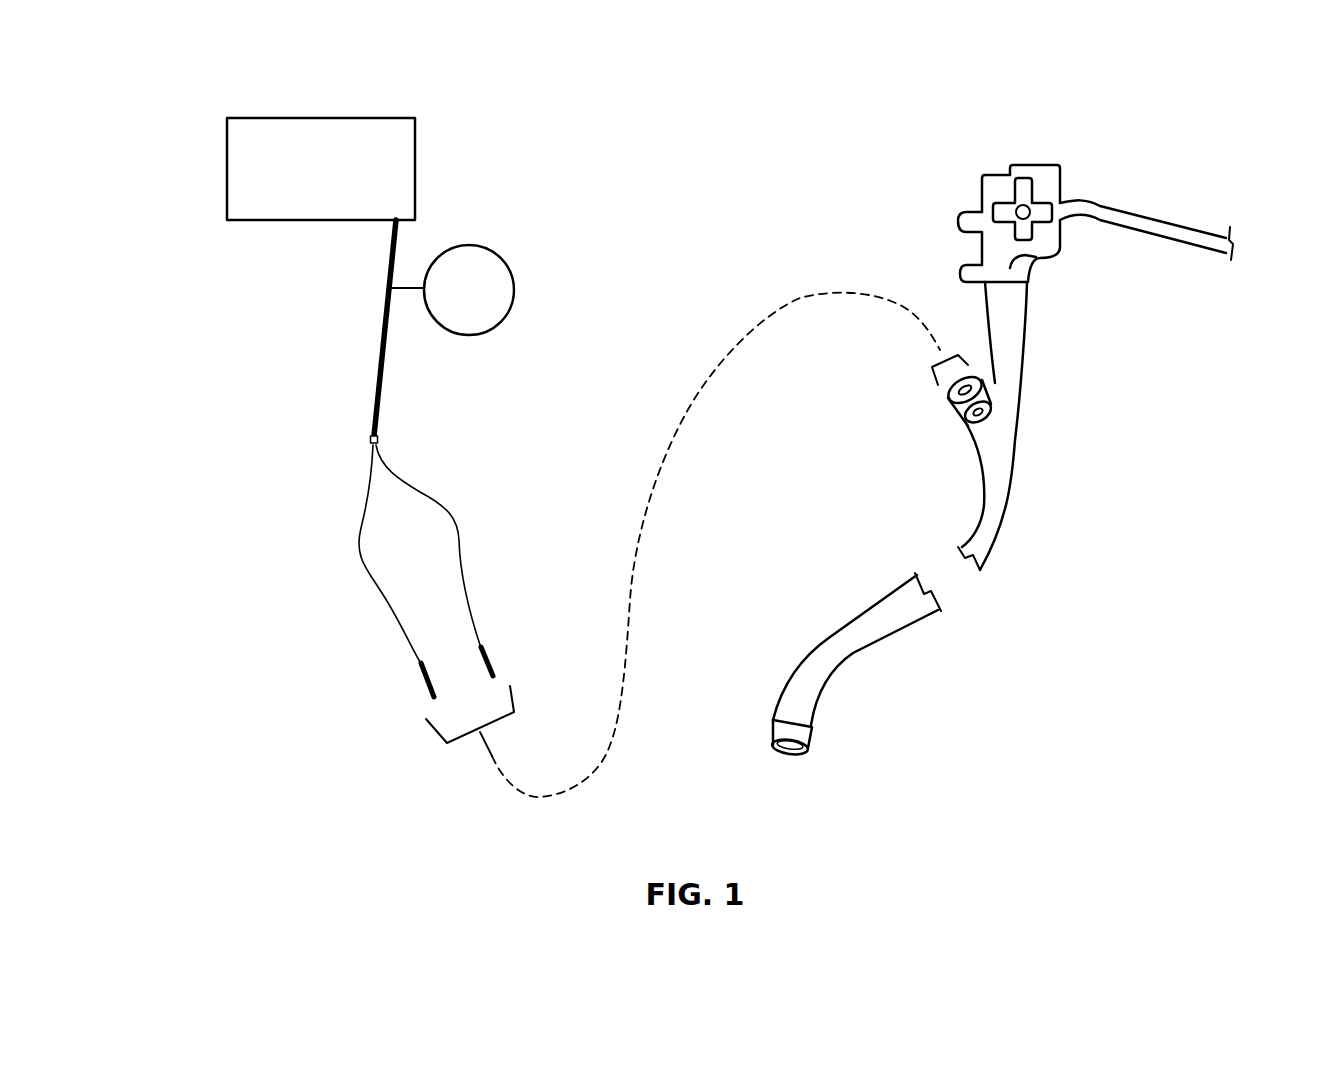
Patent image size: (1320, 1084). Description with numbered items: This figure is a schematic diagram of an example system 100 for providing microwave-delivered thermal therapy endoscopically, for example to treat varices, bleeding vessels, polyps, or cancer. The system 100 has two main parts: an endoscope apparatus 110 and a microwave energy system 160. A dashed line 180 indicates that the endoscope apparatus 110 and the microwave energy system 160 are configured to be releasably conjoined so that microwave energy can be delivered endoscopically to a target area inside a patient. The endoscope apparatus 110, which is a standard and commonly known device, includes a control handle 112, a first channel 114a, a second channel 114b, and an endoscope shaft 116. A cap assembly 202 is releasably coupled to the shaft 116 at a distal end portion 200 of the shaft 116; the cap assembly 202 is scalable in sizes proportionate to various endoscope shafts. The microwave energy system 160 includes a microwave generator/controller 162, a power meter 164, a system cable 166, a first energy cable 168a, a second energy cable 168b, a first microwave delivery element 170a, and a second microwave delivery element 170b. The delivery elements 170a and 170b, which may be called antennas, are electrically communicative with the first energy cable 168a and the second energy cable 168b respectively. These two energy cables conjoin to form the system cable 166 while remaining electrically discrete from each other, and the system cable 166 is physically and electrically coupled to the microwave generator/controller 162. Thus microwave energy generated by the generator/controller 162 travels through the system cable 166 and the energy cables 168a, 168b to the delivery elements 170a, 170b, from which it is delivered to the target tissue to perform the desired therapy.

The system 100 is at (1070, 845).
The endoscope apparatus 110 is at (1112, 147).
The control handle 112 is at (982, 192).
The first channel 114a is at (948, 397).
The second channel 114b is at (965, 430).
The endoscope shaft 116 is at (1012, 500).
The microwave energy system 160 is at (512, 143).
The microwave generator/controller 162 is at (270, 222).
The power meter 164 is at (513, 273).
The system cable 166 is at (380, 359).
The first energy cable 168a is at (460, 533).
The second energy cable 168b is at (363, 554).
The first microwave delivery element 170a is at (493, 663).
The second microwave delivery element 170b is at (423, 684).
The dashed line 180 is at (767, 320).
The distal end portion 200 is at (799, 665).
The cap assembly 202 is at (773, 731).